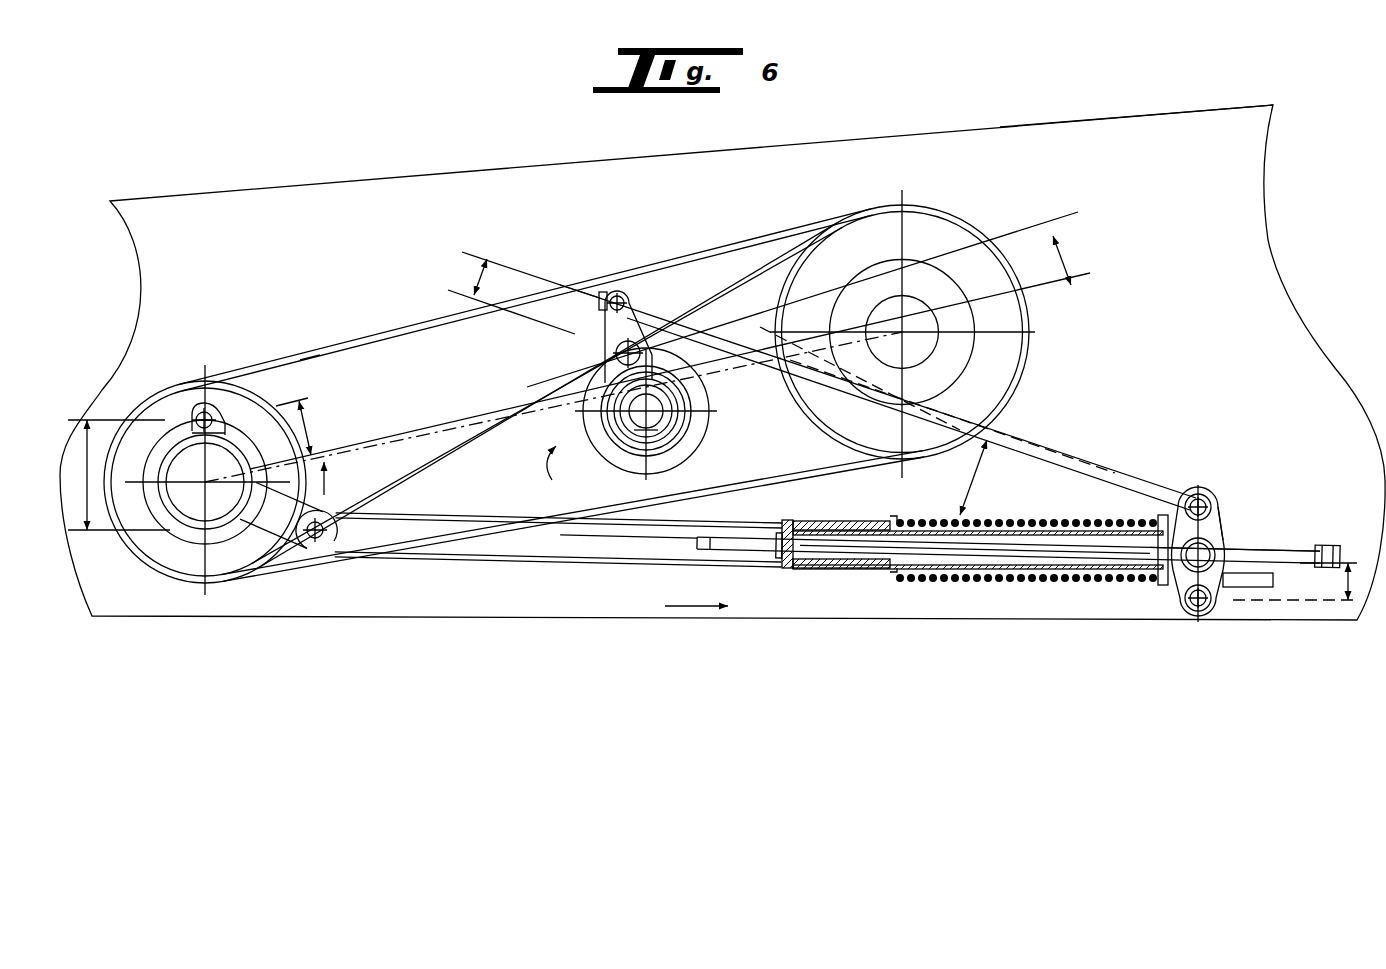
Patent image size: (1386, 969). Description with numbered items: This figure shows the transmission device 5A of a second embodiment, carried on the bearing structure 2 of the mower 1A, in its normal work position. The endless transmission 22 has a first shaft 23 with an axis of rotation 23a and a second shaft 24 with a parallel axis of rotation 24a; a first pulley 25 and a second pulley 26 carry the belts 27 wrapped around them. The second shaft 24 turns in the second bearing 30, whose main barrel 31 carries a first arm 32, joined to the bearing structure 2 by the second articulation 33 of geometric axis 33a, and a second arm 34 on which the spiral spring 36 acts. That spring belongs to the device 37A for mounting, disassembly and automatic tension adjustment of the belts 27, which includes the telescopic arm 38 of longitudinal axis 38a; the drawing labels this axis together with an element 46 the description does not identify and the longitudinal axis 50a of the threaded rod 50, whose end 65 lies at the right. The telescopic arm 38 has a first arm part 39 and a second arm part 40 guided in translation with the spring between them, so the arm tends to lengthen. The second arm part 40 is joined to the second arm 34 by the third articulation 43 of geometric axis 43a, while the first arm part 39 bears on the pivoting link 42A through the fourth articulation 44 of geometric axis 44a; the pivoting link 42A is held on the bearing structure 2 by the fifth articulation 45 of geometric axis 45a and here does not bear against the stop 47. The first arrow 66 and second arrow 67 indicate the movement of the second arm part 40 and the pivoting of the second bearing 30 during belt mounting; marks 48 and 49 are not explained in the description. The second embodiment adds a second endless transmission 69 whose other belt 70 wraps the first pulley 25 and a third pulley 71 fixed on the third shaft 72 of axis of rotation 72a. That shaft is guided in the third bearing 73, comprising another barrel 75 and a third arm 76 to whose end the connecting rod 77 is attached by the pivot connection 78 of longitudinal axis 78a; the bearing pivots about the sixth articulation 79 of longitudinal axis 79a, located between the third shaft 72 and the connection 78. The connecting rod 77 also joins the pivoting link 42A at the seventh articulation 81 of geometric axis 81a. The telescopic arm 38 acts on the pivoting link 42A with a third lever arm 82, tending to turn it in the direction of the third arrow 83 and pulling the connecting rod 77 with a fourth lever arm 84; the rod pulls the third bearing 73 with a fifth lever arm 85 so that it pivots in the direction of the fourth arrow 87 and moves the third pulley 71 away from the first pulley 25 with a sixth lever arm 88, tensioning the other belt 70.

The mower 1A is at (1105, 118).
The bearing structure 2 is at (312, 182).
The endless transmission 22 is at (414, 324).
The first shaft 23 is at (915, 320).
The axis of rotation 23a is at (912, 338).
The second shaft 24 is at (208, 497).
The axis of rotation 24a is at (203, 505).
The first pulley 25 is at (913, 224).
The second pulley 26 is at (164, 400).
The belts 27 is at (347, 352).
The second bearing 30 is at (276, 508).
The main barrel 31 is at (230, 503).
The first arm 32 is at (223, 422).
The second articulation 33 is at (202, 410).
The geometric axis 33a is at (211, 405).
The second arm 34 is at (266, 522).
The spiral spring 36 is at (966, 586).
The device for the mounting/disassembly and automatic tension adjustment of the belt 37A is at (852, 578).
The telescopic arm 38 is at (770, 572).
The longitudinal axis 38a is at (575, 544).
The rod 46 is at (900, 547).
The longitudinal axis 50a is at (1075, 551).
The first arm part 39 is at (1160, 530).
The second arm part 40 is at (645, 572).
The pivoting link 42A is at (1209, 582).
The third articulation 43 is at (337, 524).
The geometric axis 43a is at (321, 540).
The fourth articulation 44 is at (1192, 546).
The geometric axis 44a is at (1196, 560).
The fifth articulation 45 is at (1203, 612).
The geometric axis 45a is at (1196, 604).
The stop 47 is at (1255, 584).
The offset dimension 48 is at (86, 466).
The belt offset dimension 49 is at (306, 433).
The threaded rod 50 is at (1262, 545).
The end 65 is at (1332, 529).
The first arrow 66 is at (692, 612).
The second arrow 67 is at (326, 488).
The second endless transmission 69 is at (739, 283).
The other belt 70 is at (713, 297).
The third pulley 71 is at (677, 450).
The third shaft 72 is at (688, 390).
The axis of rotation 72a is at (653, 430).
The third bearing 73 is at (614, 433).
The other barrel 75 is at (638, 447).
The third arm 76 is at (604, 338).
The connecting rod 77 is at (1072, 458).
The connection 78 is at (614, 297).
The longitudinal axis 78a is at (626, 296).
The sixth articulation 79 is at (617, 347).
The longitudinal axis 79a is at (540, 390).
The seventh articulation 81 is at (1196, 500).
The geometric axis 81a is at (1205, 500).
The third lever arm 82 is at (1343, 590).
The third arrow 83 is at (1222, 528).
The fourth lever arm 84 is at (985, 452).
The fifth lever arm 85 is at (478, 285).
The fourth arrow 87 is at (552, 480).
The sixth lever arm 88 is at (1068, 254).
The transmission device 5A is at (577, 280).